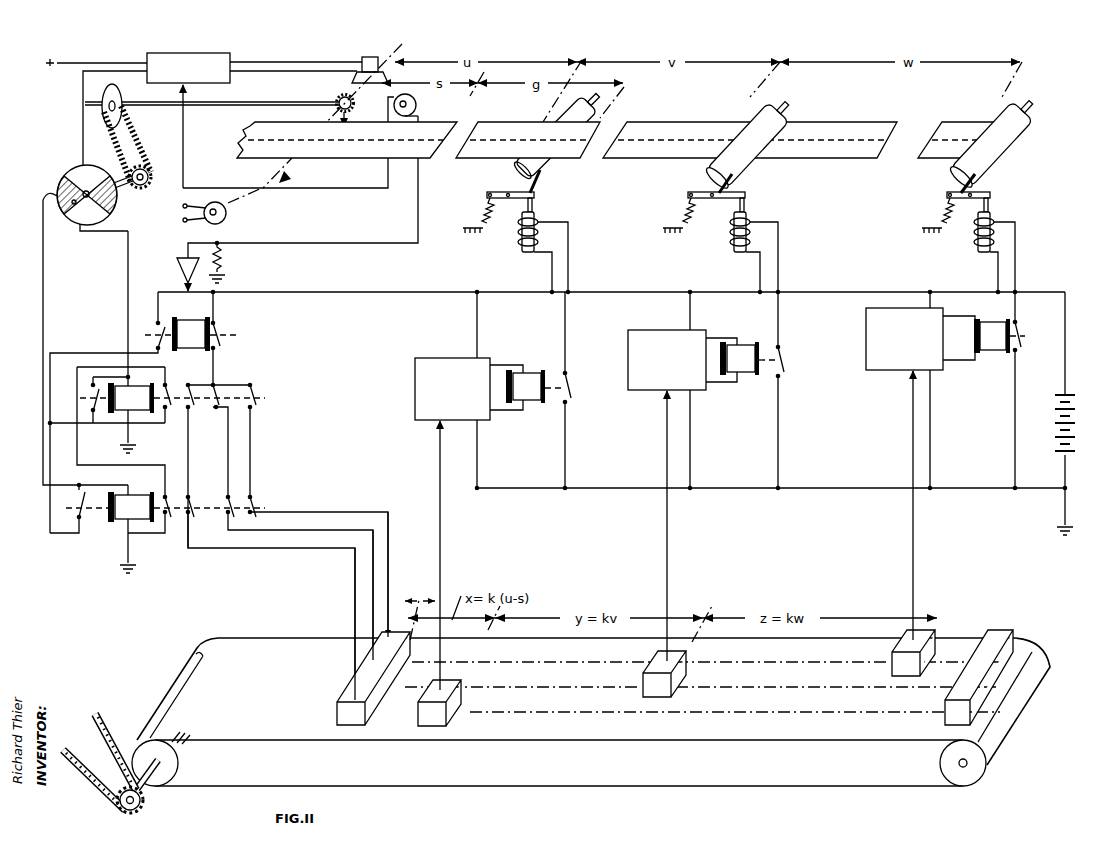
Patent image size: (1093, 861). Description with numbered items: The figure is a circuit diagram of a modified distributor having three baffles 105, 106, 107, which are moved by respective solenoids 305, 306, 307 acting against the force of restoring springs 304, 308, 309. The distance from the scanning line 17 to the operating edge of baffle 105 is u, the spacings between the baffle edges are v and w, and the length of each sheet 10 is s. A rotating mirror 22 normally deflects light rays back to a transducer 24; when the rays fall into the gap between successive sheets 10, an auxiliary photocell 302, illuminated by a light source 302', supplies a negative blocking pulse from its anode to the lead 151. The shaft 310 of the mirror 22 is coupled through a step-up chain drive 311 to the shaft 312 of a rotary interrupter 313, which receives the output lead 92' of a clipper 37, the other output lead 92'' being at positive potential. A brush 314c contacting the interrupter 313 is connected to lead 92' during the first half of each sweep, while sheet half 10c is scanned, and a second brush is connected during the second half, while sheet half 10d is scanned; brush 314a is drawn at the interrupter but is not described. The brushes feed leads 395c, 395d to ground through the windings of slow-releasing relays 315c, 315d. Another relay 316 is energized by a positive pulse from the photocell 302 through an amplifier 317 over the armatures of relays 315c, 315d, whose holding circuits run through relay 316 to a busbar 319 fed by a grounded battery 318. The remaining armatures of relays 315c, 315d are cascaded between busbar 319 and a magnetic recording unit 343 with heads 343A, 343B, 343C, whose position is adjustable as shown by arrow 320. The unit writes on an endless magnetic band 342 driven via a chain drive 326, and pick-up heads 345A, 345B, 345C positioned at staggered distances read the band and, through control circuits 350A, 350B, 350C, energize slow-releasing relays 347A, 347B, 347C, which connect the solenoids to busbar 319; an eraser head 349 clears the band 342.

The output lead 92'' is at (93, 76).
The output lead 92' is at (98, 132).
The clipper 37 is at (231, 72).
The transducer 24 is at (362, 58).
The scanning line 17 is at (401, 49).
The mirror 22 is at (342, 98).
The shaft 310 is at (249, 105).
The chain drive 311 is at (129, 129).
The shaft 312 is at (135, 187).
The rotary interrupter 313 is at (63, 181).
The brush 314c is at (47, 201).
The brush 314a is at (83, 232).
The lead 151 is at (183, 137).
The auxiliary photocell 302 is at (423, 105).
The light source 302' is at (225, 208).
The sheet 10 is at (380, 160).
The sheet half 10c is at (651, 153).
The sheet half 10d is at (681, 130).
The baffle 105 is at (560, 166).
The baffle 106 is at (750, 165).
The baffle 107 is at (994, 165).
The restoring spring 304 is at (487, 203).
The solenoid 305 is at (520, 240).
The solenoid 306 is at (732, 240).
The solenoid 307 is at (970, 240).
The restoring spring 308 is at (673, 204).
The restoring spring 309 is at (935, 204).
The amplifier 317 is at (179, 272).
The busbar 319 is at (310, 292).
The lead 395c is at (43, 297).
The lead 395d is at (128, 306).
The relay 316 is at (145, 412).
The slow-releasing relay 315d is at (117, 412).
The slow-releasing relay 315c is at (117, 521).
The control circuit 350A is at (447, 358).
The control circuit 350B is at (664, 330).
The control circuit 350C is at (866, 338).
The slow-releasing relay 347A is at (537, 402).
The slow-releasing relay 347B is at (752, 374).
The slow-releasing relay 347C is at (992, 351).
The battery 318 is at (1060, 418).
The endless magnetic band 342 is at (238, 646).
The magnetic recording unit 343 is at (341, 696).
The recording head 343A is at (352, 675).
The recording head 343B is at (370, 658).
The recording head 343C is at (385, 633).
The arrow 320 is at (411, 613).
The pick-up head 345A is at (437, 726).
The pick-up head 345B is at (662, 696).
The pick-up head 345C is at (912, 674).
The eraser head 349 is at (996, 634).
The chain drive 326 is at (98, 715).